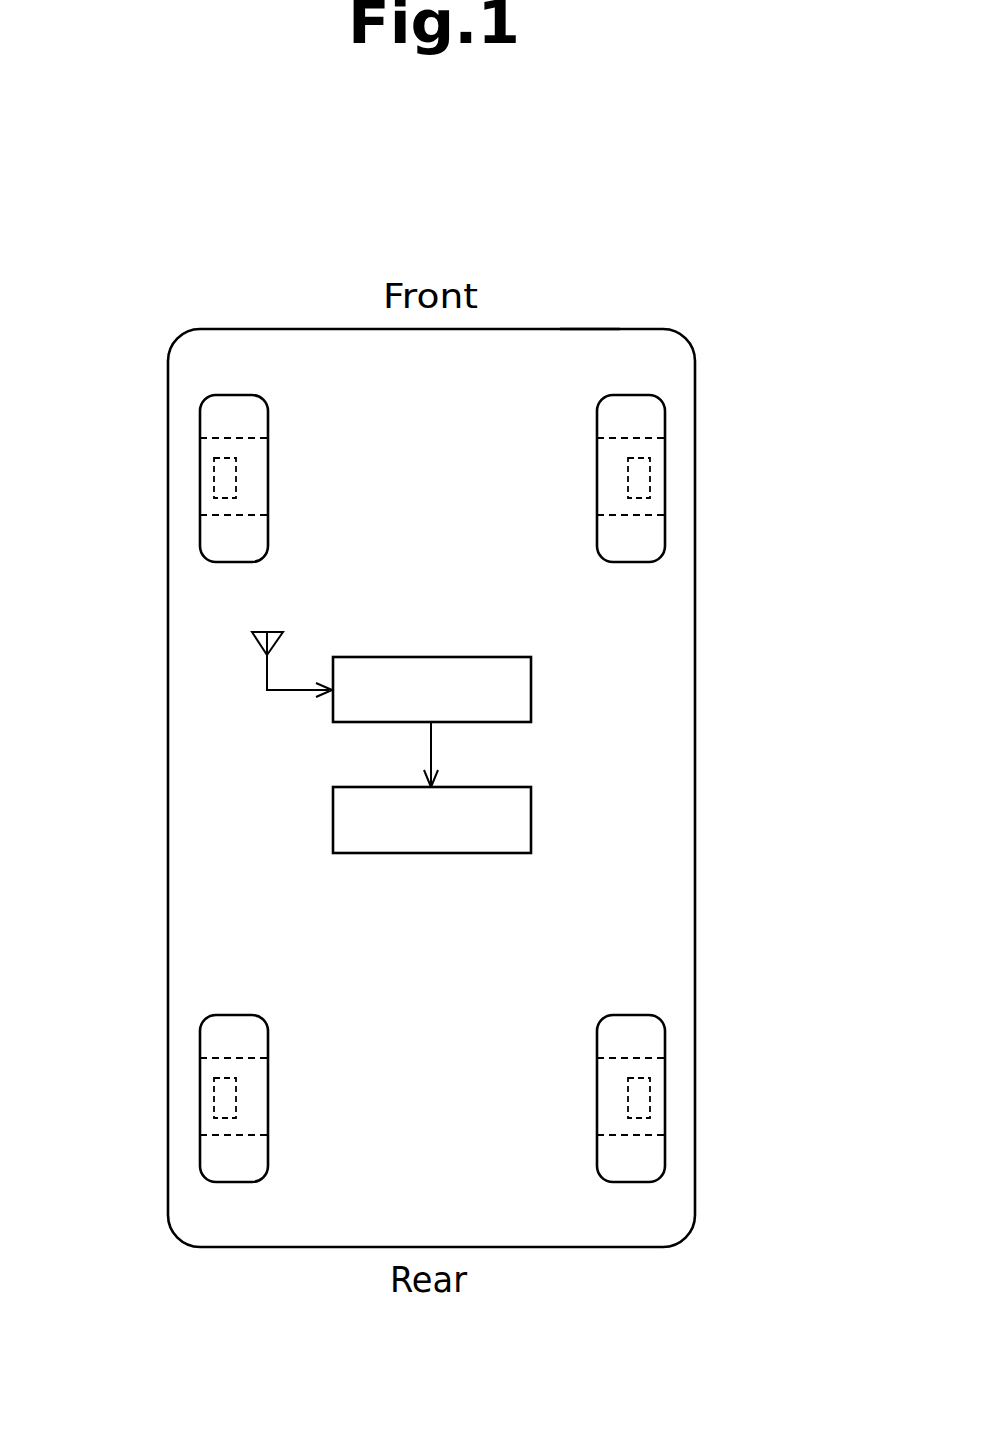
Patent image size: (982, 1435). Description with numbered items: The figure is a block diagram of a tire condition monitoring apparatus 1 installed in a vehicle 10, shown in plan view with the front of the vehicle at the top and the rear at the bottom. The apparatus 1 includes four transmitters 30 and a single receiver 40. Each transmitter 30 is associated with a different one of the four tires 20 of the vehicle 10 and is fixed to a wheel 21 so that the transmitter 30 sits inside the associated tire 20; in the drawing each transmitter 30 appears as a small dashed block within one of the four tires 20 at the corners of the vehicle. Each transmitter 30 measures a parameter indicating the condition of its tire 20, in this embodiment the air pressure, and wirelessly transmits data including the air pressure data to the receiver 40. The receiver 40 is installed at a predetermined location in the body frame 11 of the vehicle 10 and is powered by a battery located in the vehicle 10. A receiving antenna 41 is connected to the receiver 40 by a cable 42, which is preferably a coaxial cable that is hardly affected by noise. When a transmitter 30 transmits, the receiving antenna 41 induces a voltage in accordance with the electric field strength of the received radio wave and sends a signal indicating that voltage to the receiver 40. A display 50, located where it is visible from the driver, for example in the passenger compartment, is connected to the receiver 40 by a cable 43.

The tire condition monitoring apparatus 1 is at (758, 262).
The vehicle 10 is at (336, 329).
The body frame 11 is at (579, 329).
The tire 20 is at (213, 419).
The wheel 21 is at (220, 518).
The transmitter 30 is at (214, 478).
The receiver 40 is at (533, 690).
The receiving antenna 41 is at (262, 650).
The cable 42 is at (286, 692).
The cable 43 is at (433, 752).
The display 50 is at (533, 822).